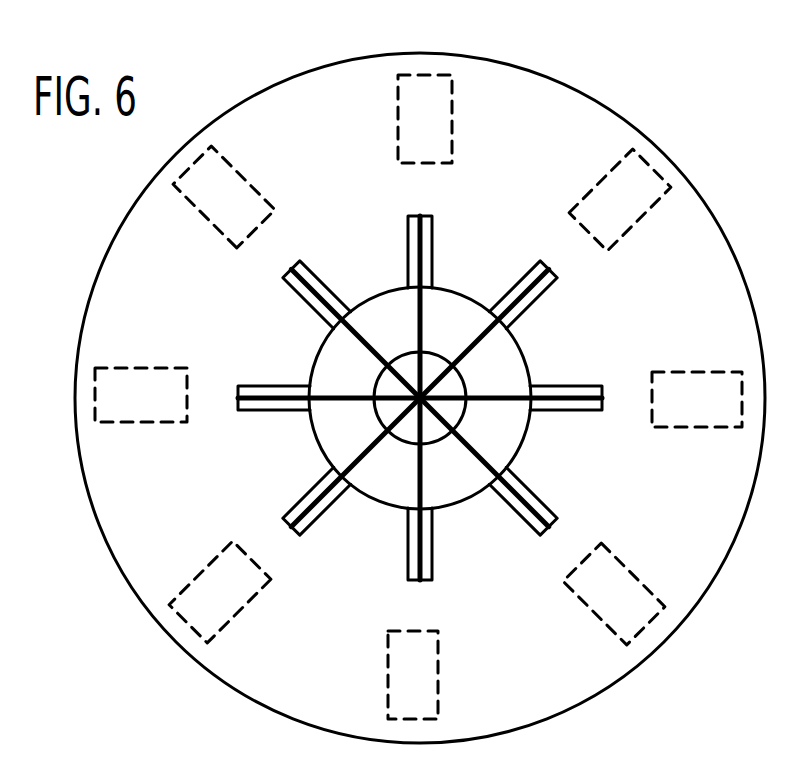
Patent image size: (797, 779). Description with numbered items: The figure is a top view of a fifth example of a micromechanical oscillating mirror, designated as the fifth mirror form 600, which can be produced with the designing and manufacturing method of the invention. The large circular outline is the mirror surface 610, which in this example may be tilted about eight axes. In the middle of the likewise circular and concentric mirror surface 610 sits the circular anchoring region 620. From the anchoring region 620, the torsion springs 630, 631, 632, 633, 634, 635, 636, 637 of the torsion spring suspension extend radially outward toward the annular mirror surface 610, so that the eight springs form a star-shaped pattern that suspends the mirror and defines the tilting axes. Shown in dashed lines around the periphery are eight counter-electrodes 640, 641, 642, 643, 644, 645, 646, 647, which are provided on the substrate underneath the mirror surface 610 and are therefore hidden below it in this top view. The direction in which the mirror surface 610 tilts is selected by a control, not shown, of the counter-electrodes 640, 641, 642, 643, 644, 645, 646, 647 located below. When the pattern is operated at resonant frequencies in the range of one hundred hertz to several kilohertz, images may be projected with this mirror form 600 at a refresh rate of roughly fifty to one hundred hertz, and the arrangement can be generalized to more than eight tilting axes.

The fifth mirror form 600 is at (420, 377).
The mirror surface 610 is at (533, 77).
The anchoring region 620 is at (433, 364).
The torsion spring suspension 630 is at (540, 297).
The torsion spring suspension 631 is at (588, 409).
The torsion spring suspension 632 is at (522, 518).
The torsion spring suspension 633 is at (404, 567).
The torsion spring suspension 634 is at (298, 502).
The torsion spring suspension 635 is at (253, 384).
The torsion spring suspension 636 is at (313, 278).
The torsion spring suspension 637 is at (432, 232).
The counter-electrode 640 is at (633, 228).
The counter-electrode 641 is at (697, 427).
The counter-electrode 642 is at (583, 612).
The counter-electrode 643 is at (389, 676).
The counter-electrode 644 is at (211, 573).
The counter-electrode 645 is at (141, 368).
The counter-electrode 646 is at (239, 182).
The counter-electrode 647 is at (449, 119).